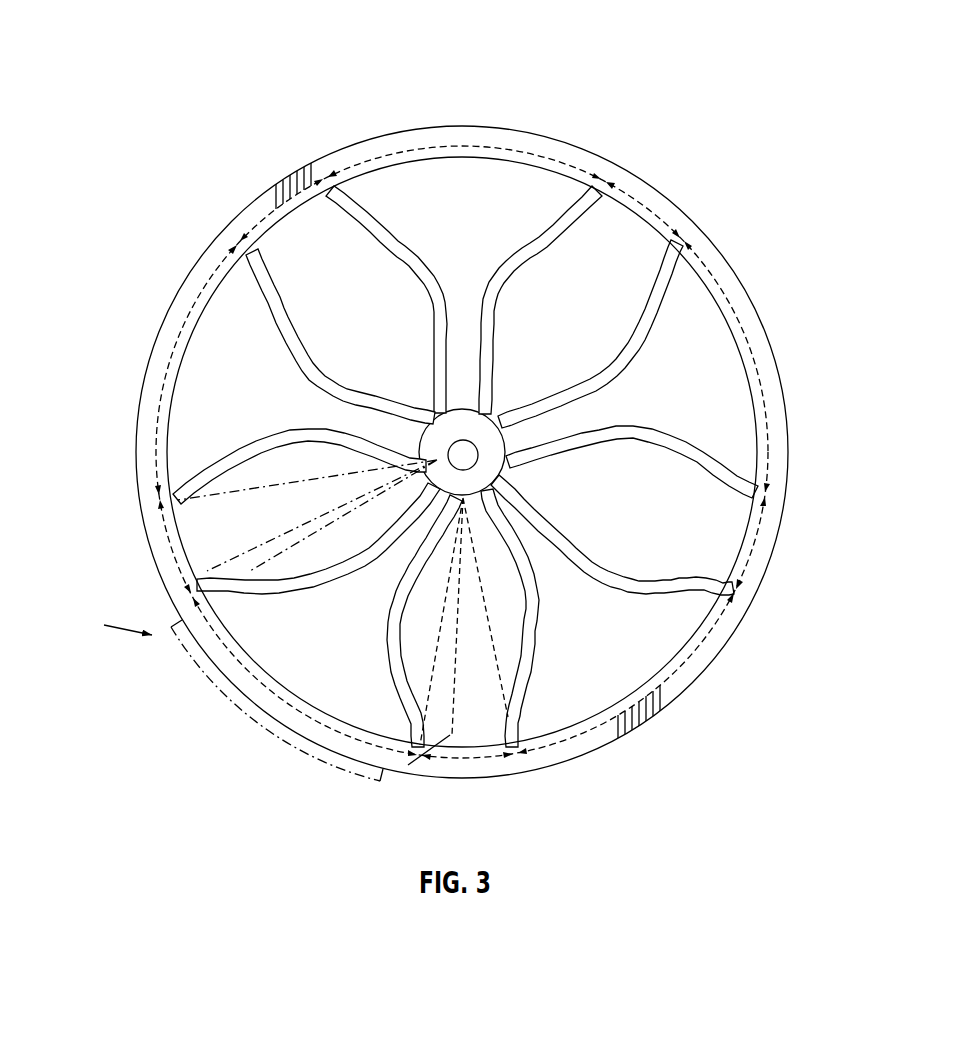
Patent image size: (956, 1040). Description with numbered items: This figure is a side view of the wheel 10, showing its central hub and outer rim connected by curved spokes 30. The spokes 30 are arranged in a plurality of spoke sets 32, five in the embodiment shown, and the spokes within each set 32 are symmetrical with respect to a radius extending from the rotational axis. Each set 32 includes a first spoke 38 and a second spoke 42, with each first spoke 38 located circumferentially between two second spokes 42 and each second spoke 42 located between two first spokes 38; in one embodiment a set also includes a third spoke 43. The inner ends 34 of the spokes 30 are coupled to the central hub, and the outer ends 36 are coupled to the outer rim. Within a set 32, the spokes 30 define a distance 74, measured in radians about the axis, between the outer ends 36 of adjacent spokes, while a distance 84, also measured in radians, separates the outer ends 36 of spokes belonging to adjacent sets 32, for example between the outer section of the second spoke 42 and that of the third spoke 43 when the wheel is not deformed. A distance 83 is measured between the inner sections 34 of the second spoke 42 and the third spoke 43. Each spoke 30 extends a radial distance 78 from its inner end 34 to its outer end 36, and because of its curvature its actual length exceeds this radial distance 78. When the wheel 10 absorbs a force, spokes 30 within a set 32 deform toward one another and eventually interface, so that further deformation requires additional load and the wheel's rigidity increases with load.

The wheel 10 is at (277, 41).
The spokes 30 is at (332, 406).
The spoke sets 32 is at (187, 676).
The inner ends 34 is at (434, 462).
The outer ends 36 is at (187, 481).
The first spoke 38 is at (678, 256).
The second spoke 42 is at (769, 491).
The third spoke 43 is at (684, 601).
The distance 74 is at (455, 128).
The radial distance 78 is at (486, 716).
The distance 83 is at (522, 470).
The distance 84 is at (261, 216).